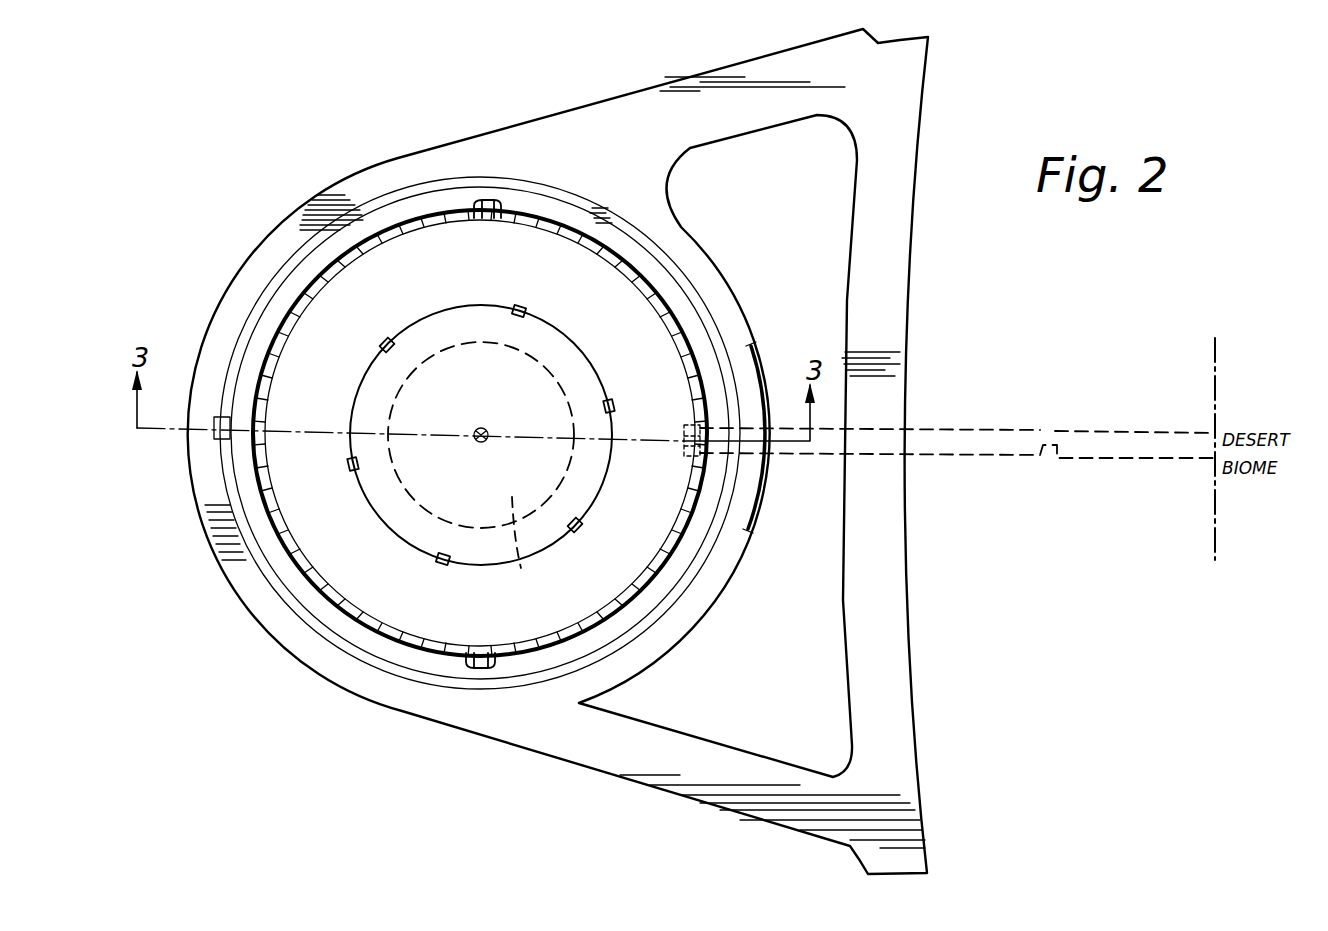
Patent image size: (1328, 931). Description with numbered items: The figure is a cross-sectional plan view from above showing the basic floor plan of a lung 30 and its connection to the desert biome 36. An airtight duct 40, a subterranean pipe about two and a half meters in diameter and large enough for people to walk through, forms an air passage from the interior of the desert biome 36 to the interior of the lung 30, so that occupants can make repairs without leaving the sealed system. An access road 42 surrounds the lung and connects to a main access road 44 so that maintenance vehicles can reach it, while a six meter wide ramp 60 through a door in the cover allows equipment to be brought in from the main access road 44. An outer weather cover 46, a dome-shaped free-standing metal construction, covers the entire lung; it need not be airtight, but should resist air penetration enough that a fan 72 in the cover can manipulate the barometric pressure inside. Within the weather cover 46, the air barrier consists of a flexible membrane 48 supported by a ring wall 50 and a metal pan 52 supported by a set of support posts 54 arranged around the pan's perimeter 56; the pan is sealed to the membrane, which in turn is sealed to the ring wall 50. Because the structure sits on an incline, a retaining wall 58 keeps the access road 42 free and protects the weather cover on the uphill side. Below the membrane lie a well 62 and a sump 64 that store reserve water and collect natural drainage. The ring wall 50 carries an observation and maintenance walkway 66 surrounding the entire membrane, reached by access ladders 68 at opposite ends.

The lung 30 is at (256, 213).
The desert biome 36 is at (1212, 503).
The airtight duct 40 is at (975, 428).
The access road 42 is at (322, 648).
The main access road 44 is at (900, 338).
The outer weather cover 46 is at (277, 585).
The flexible membrane 48 is at (346, 542).
The ring wall 50 is at (263, 520).
The metal pan 52 is at (502, 397).
The support posts 54 is at (390, 338).
The perimeter 56 is at (356, 388).
The retaining wall 58 is at (768, 360).
The ramp 60 is at (600, 222).
The well 62 is at (510, 549).
The sump 64 is at (490, 428).
The observation and maintenance walkway 66 is at (370, 247).
The access ladders 68 is at (495, 220).
The fan 72 is at (216, 420).